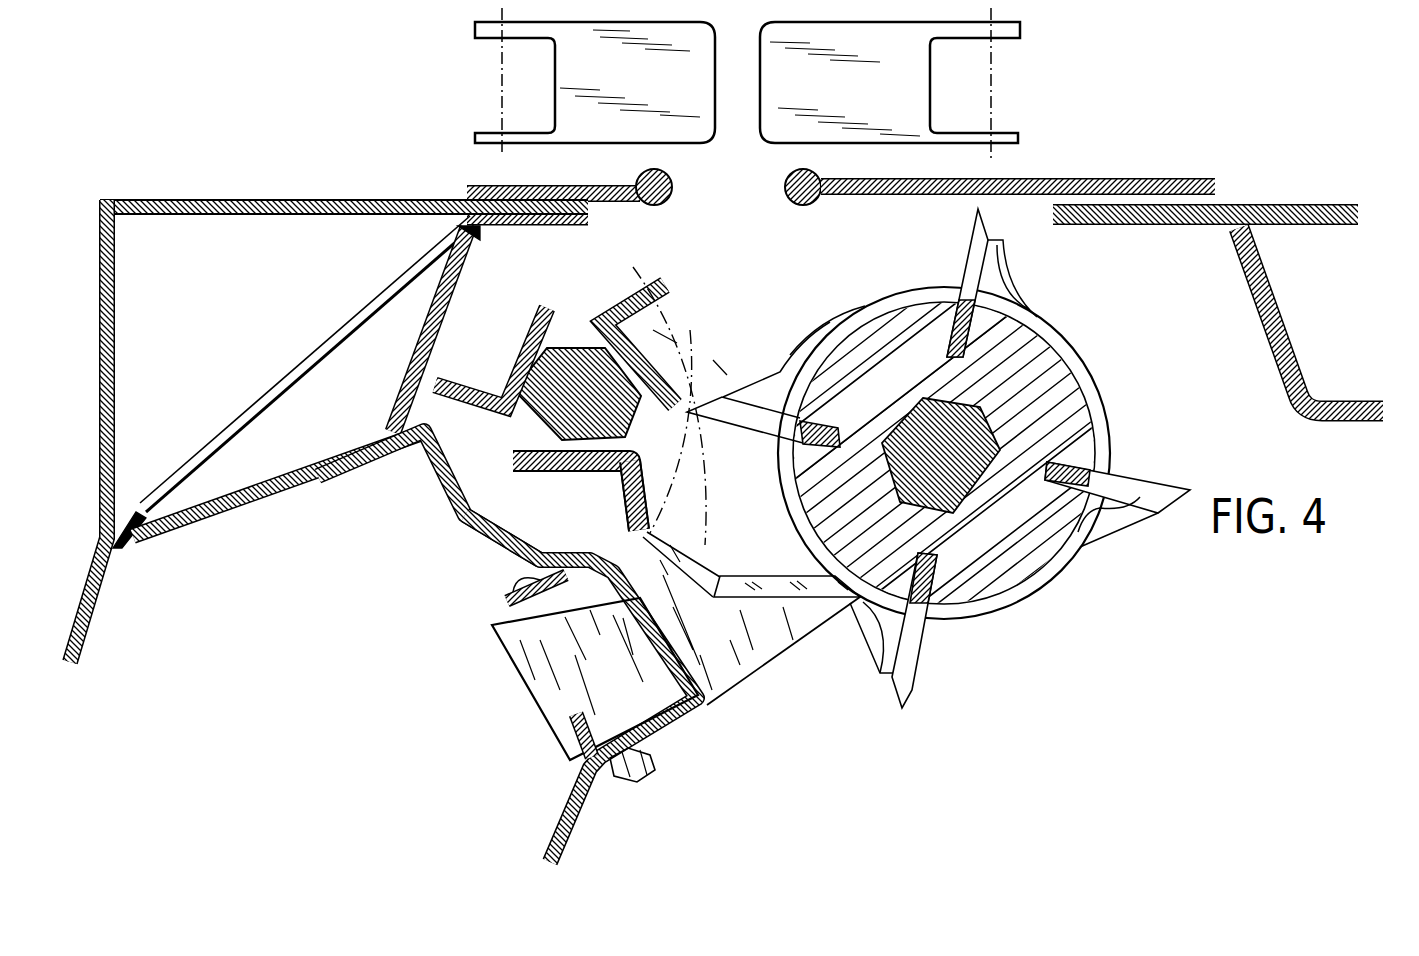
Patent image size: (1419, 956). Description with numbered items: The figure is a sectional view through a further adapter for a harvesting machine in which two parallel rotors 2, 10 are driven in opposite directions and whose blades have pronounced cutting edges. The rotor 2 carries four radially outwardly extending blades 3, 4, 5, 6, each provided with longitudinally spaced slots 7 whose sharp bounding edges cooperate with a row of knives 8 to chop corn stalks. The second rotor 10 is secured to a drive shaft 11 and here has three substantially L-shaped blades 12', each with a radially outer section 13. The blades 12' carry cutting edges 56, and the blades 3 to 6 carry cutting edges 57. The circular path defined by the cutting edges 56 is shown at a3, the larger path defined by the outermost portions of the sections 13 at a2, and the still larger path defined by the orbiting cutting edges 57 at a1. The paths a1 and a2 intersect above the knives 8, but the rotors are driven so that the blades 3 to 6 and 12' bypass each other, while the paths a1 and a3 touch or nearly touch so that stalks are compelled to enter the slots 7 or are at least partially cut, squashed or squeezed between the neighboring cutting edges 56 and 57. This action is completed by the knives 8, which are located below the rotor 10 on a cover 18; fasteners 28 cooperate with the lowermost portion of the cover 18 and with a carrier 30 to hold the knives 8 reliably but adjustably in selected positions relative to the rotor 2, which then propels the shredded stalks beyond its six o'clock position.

The rotor 2 is at (1040, 616).
The blade 3 is at (950, 254).
The blade 4 is at (738, 452).
The blade 5 is at (935, 648).
The blade 6 is at (1155, 462).
The slot 7 is at (1140, 488).
The knife 8 is at (733, 643).
The rotor 10 is at (468, 460).
The drive shaft 11 is at (588, 455).
The blade 12' is at (555, 386).
The blade section 13 is at (642, 513).
The cover 18 is at (552, 478).
The fastener 28 is at (637, 780).
The carrier 30 is at (521, 620).
The cutting edge 56 is at (541, 322).
The cutting edge 57 is at (1190, 490).
The circular path a1 is at (737, 307).
The circular path a2 is at (693, 303).
The circular path a3 is at (667, 330).